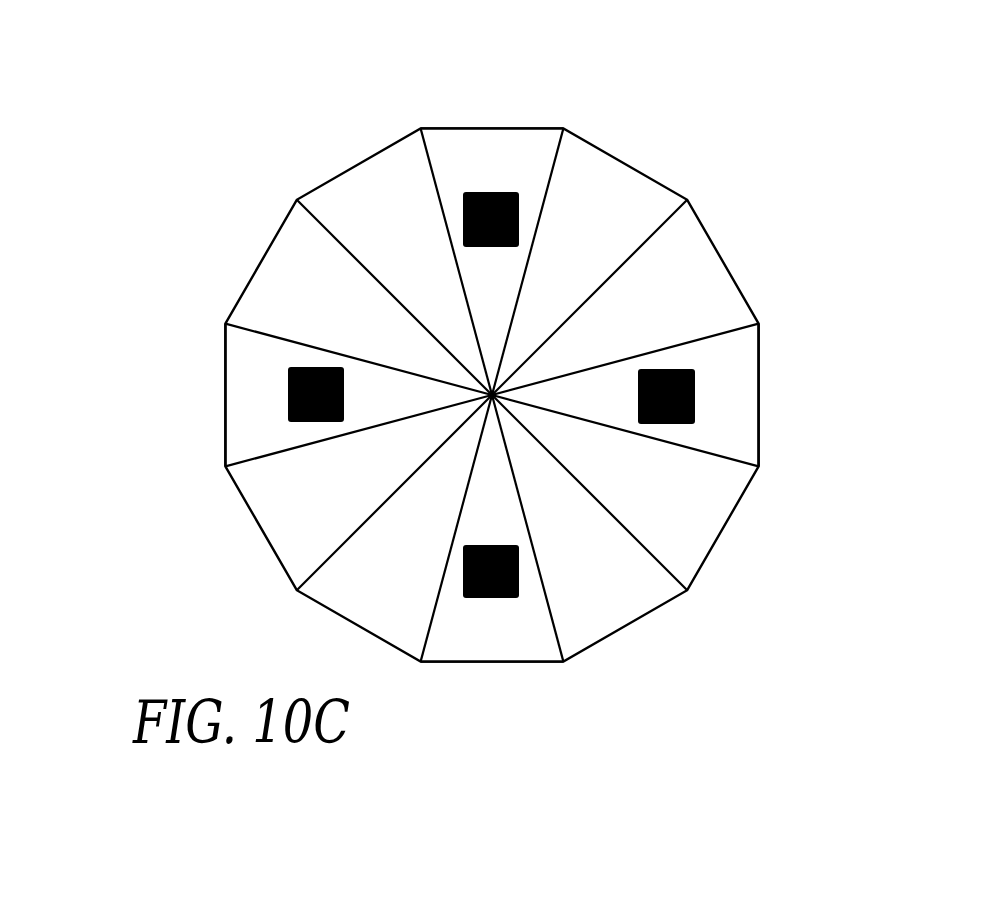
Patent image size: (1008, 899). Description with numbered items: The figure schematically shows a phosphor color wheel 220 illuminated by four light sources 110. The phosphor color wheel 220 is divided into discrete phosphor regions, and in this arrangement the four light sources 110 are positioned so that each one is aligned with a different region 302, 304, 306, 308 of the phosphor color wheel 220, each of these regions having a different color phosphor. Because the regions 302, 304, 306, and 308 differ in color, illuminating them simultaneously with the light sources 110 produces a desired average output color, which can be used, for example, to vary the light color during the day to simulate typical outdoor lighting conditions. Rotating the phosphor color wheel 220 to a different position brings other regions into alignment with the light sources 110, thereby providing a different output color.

The phosphor color wheel 220 is at (166, 116).
The region of the phosphor color wheel 302 is at (498, 128).
The region of the phosphor color wheel 304 is at (759, 398).
The region of the phosphor color wheel 306 is at (493, 662).
The region of the phosphor color wheel 308 is at (225, 382).
The light source 110 is at (495, 193).